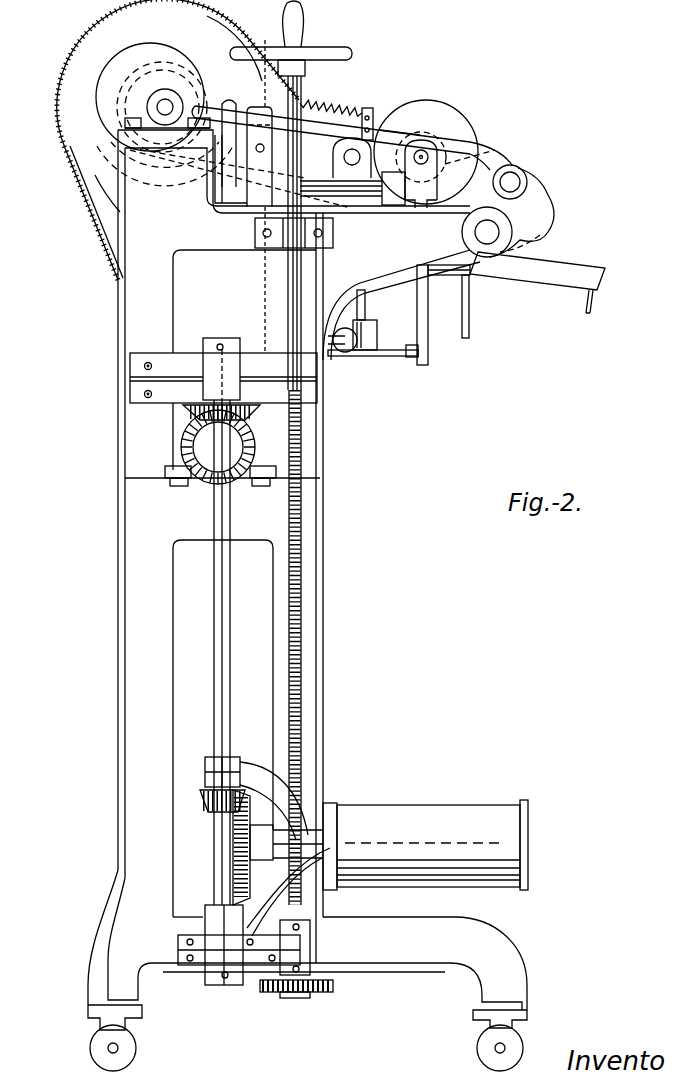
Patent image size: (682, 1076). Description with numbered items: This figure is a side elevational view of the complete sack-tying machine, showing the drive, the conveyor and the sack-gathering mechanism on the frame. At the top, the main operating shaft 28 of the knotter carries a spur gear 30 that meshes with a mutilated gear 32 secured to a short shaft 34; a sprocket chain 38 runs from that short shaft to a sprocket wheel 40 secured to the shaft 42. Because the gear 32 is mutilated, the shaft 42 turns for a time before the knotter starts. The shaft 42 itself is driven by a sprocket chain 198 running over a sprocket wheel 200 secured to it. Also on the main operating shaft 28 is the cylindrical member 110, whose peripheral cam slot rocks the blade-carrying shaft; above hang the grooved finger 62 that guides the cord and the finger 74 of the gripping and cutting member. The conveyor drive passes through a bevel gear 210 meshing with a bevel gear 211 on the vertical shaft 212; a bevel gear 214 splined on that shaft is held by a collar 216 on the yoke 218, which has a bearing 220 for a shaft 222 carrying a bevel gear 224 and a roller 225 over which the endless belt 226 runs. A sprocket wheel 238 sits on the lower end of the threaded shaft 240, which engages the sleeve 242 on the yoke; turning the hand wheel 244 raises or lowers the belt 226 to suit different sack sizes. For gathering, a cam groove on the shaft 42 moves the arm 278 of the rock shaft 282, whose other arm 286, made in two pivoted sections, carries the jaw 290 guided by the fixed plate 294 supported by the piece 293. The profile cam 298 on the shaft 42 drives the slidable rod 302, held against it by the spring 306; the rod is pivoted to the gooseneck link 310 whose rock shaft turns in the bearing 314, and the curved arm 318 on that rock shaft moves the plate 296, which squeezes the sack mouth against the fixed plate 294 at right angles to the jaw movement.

The main operating shaft 28 is at (424, 154).
The spur gear 30 is at (490, 142).
The mutilated gear 32 is at (398, 133).
The short shaft 34 is at (352, 165).
The sprocket chain 38 is at (222, 30).
The sprocket wheel 40 is at (76, 36).
The shaft 42 is at (157, 106).
The finger 62 is at (460, 273).
The finger 74 is at (470, 330).
The cylindrical member 110 is at (432, 110).
The sprocket chain 198 is at (97, 240).
The sprocket wheel 200 is at (97, 195).
The bevel gear 210 is at (182, 455).
The bevel gear 211 is at (185, 408).
The vertical shaft 212 is at (218, 520).
The bevel gear 214 is at (207, 800).
The collar 216 is at (210, 768).
The yoke 218 is at (248, 765).
The bearing 220 is at (337, 802).
The shaft 222 is at (310, 818).
The bevel gear 224 is at (237, 865).
The roller 225 is at (528, 888).
The endless belt 226 is at (490, 803).
The sprocket wheel 238 is at (320, 993).
The threaded shaft 240 is at (303, 625).
The sleeve 242 is at (307, 893).
The hand wheel 244 is at (333, 50).
The arm 278 is at (222, 178).
The rock shaft 282 is at (377, 203).
The arm 286 is at (425, 337).
The jaw 290 is at (410, 357).
The piece 293 is at (348, 357).
The fixed plate 294 is at (387, 350).
The plate 296 is at (593, 312).
The profile cam 298 is at (107, 72).
The slidable rod 302 is at (377, 148).
The spring 306 is at (328, 100).
The gooseneck link 310 is at (547, 208).
The bearing 314 is at (492, 250).
The curved arm 318 is at (587, 257).